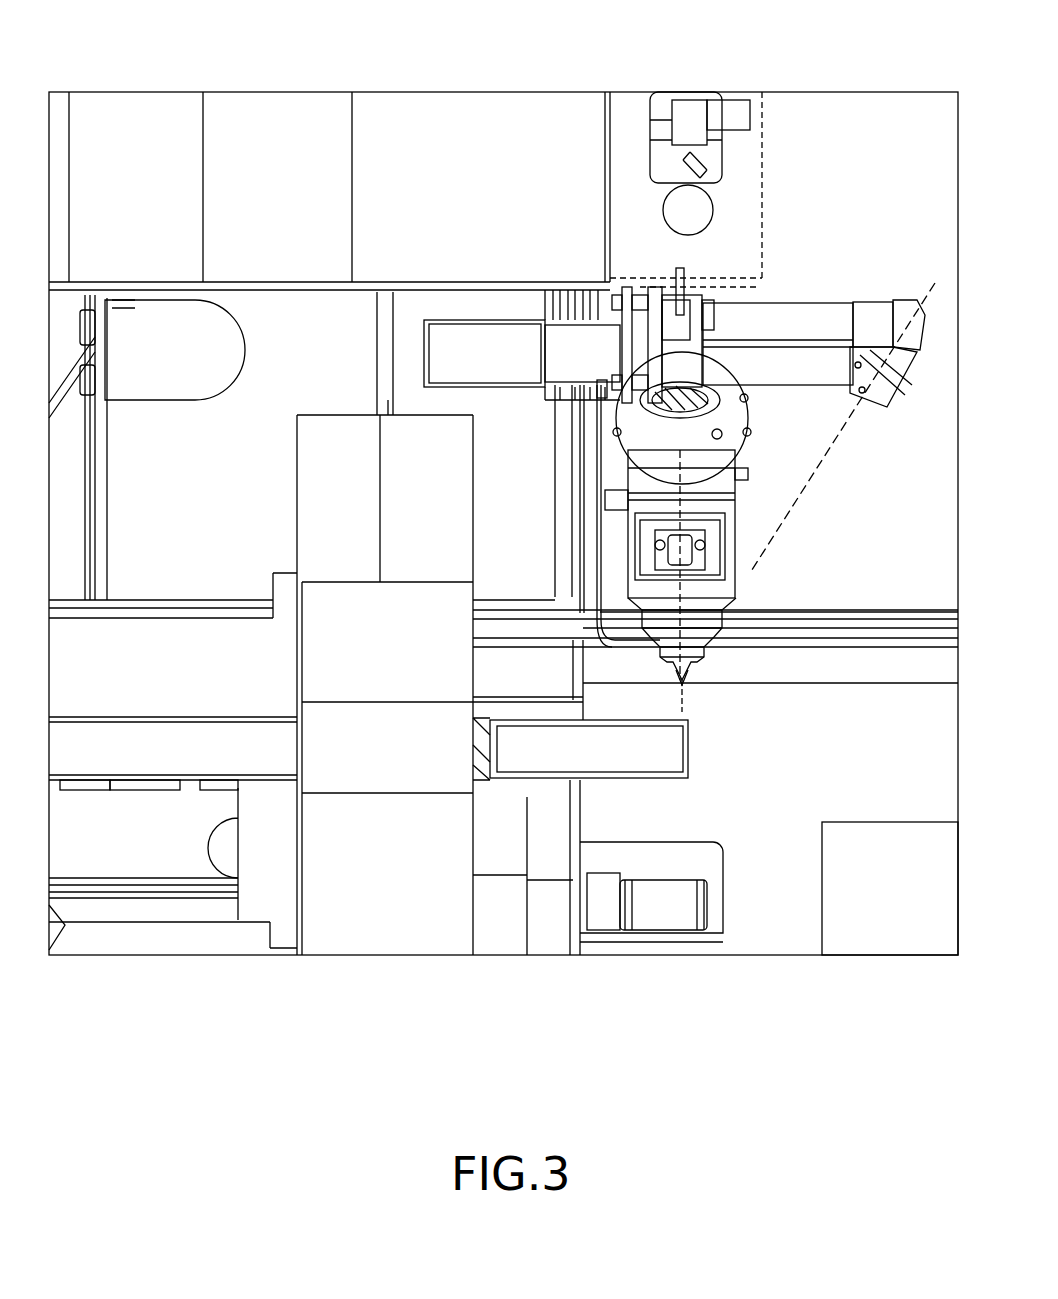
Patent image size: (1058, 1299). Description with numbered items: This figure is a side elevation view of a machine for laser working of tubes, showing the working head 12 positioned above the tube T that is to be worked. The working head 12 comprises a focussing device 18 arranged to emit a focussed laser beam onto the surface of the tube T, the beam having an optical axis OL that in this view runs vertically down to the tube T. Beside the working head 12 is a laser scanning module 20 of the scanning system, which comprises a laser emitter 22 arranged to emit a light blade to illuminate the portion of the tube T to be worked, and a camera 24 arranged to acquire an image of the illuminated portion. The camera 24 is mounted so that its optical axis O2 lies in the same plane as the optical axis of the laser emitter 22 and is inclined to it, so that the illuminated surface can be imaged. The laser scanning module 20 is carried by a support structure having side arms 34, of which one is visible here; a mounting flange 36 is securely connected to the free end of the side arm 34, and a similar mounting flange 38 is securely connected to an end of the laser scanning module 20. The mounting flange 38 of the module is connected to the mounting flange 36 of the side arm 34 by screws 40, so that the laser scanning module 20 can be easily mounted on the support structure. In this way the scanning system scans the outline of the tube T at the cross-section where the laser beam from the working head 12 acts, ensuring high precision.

The working head 12 is at (742, 600).
The focussing device 18 is at (690, 690).
The laser scanning module 20 is at (820, 298).
The laser emitter 22 is at (683, 292).
The camera 24 is at (878, 412).
The side arm 34 is at (588, 320).
The mounting flange 36 is at (618, 360).
The mounting flange 38 is at (705, 352).
The screws 40 is at (738, 388).
The optical axis of the camera O2 is at (805, 510).
The optical axis of the laser beam OL is at (682, 728).
The tube T is at (682, 690).